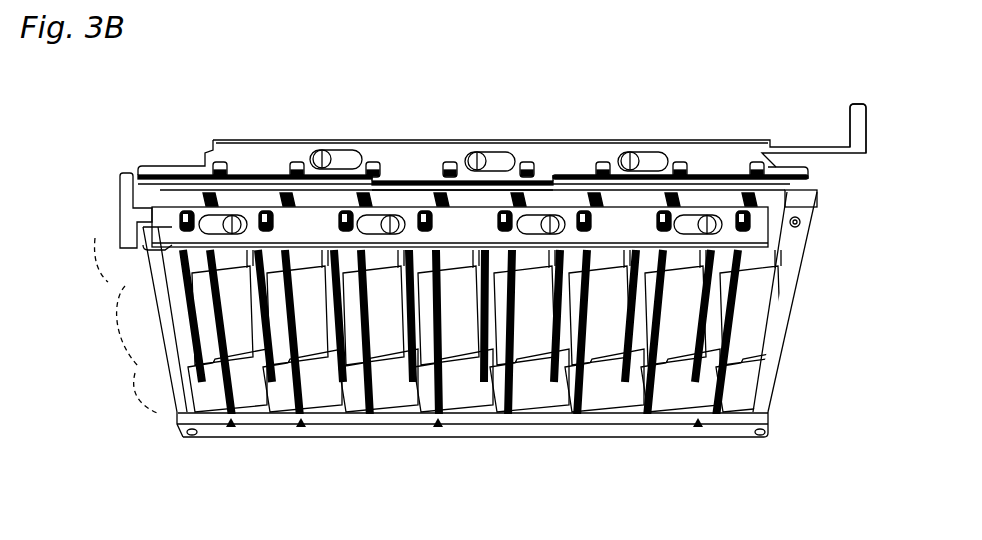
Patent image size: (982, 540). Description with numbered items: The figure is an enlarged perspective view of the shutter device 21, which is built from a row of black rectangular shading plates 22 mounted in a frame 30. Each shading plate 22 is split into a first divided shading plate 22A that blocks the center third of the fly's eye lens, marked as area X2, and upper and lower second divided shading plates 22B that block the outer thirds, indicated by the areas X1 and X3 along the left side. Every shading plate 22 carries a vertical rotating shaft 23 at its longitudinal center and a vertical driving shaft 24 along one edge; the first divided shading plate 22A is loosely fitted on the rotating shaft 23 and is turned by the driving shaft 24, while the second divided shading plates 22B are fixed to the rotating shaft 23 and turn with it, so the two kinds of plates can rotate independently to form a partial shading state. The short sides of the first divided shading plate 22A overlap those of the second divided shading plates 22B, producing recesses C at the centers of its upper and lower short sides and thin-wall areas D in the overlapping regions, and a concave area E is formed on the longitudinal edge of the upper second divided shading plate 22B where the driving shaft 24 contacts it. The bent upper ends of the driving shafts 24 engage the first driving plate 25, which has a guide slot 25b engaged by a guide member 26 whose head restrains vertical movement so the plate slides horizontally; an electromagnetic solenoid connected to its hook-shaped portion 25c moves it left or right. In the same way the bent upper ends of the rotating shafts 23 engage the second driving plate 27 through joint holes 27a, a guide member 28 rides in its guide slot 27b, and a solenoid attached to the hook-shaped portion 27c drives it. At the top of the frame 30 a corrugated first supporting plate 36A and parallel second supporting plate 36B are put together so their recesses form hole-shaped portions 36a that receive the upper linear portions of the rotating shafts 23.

The shutter device 21 is at (722, 106).
The shading plate 22 is at (231, 425).
The first divided shading plate 22A is at (388, 340).
The second divided shading plate 22B is at (160, 250).
The rotating shaft 23 is at (510, 420).
The driving shaft 24 is at (480, 420).
The first driving plate 25 is at (768, 232).
The guide slot 25b is at (683, 214).
The hook-shaped portion 25c is at (125, 170).
The guide member 26 is at (708, 215).
The second driving plate 27 is at (728, 148).
The joint hole 27a is at (227, 161).
The guide slot 27b is at (494, 150).
The hook-shaped portion 27c is at (858, 102).
The guide member 28 is at (323, 150).
The frame 30 is at (790, 303).
The first supporting plate 36A is at (803, 205).
The second supporting plate 36B is at (806, 170).
The hole-shaped portion 36a is at (432, 200).
The recess C is at (353, 420).
The thin-wall area D is at (257, 420).
The concave area E is at (125, 235).
The area X1 is at (94, 271).
The area X2 is at (117, 327).
The area X3 is at (136, 401).